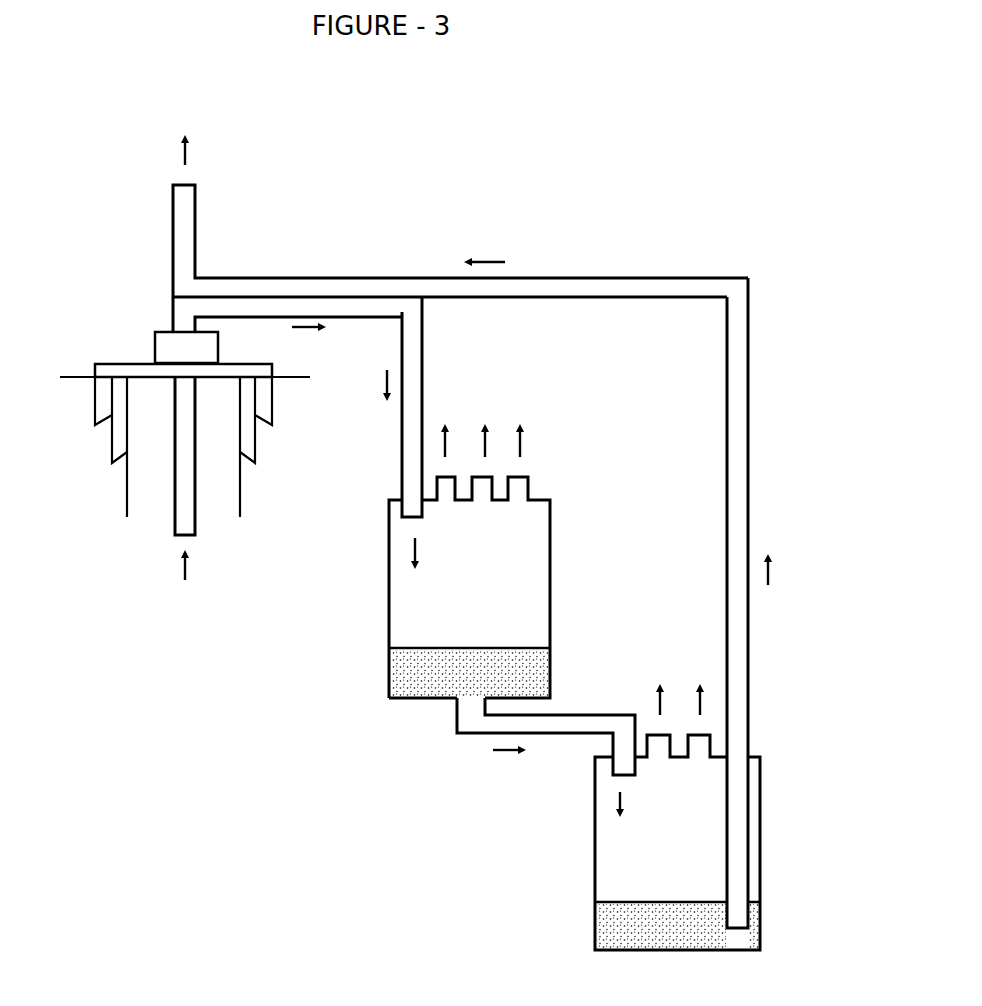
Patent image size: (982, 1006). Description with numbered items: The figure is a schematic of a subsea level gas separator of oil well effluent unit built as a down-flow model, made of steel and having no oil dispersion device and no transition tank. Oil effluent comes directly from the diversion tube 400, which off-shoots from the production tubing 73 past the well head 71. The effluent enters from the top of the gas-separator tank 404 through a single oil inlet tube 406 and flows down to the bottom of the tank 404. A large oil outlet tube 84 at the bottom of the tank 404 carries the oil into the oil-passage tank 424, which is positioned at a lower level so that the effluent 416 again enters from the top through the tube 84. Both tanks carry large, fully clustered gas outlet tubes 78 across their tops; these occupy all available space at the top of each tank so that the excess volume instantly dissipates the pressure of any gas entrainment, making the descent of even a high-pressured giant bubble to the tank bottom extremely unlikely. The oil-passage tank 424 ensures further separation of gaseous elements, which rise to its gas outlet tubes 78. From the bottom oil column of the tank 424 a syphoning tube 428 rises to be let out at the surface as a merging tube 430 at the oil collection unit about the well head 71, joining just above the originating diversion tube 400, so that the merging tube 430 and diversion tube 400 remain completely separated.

The diversion tube 400 is at (308, 302).
The merging tube 430 is at (235, 287).
The inlet tube 406 is at (400, 468).
The syphoning tube 428 is at (738, 467).
The production tubing 73 is at (183, 322).
The gas outlet tubes 78 is at (165, 350).
The well head 71 is at (137, 372).
The gas-separator tank 404 is at (388, 528).
The effluent 416 is at (400, 670).
The outlet tube 84 is at (583, 735).
The oil-passage tank 424 is at (595, 843).